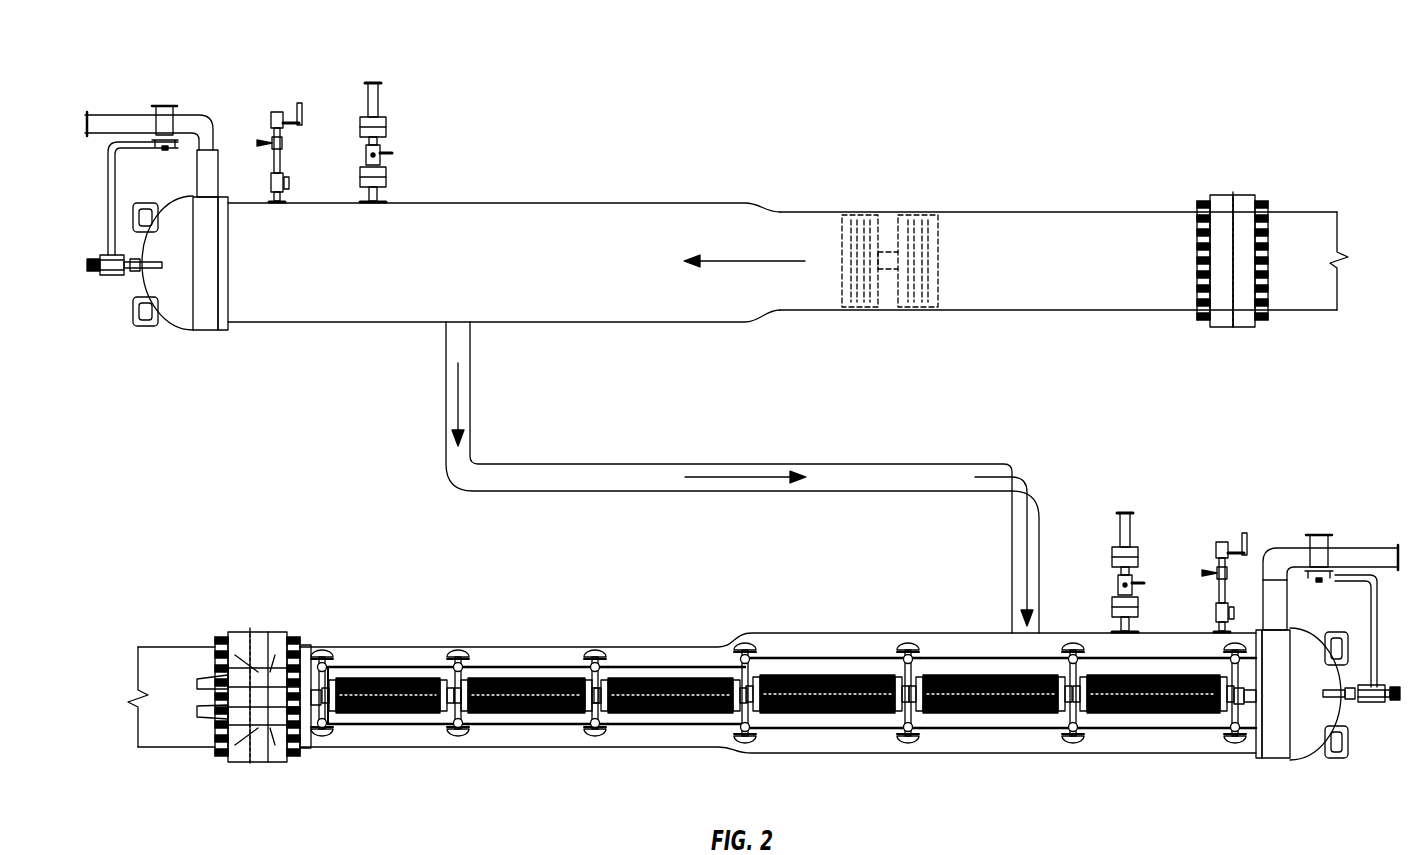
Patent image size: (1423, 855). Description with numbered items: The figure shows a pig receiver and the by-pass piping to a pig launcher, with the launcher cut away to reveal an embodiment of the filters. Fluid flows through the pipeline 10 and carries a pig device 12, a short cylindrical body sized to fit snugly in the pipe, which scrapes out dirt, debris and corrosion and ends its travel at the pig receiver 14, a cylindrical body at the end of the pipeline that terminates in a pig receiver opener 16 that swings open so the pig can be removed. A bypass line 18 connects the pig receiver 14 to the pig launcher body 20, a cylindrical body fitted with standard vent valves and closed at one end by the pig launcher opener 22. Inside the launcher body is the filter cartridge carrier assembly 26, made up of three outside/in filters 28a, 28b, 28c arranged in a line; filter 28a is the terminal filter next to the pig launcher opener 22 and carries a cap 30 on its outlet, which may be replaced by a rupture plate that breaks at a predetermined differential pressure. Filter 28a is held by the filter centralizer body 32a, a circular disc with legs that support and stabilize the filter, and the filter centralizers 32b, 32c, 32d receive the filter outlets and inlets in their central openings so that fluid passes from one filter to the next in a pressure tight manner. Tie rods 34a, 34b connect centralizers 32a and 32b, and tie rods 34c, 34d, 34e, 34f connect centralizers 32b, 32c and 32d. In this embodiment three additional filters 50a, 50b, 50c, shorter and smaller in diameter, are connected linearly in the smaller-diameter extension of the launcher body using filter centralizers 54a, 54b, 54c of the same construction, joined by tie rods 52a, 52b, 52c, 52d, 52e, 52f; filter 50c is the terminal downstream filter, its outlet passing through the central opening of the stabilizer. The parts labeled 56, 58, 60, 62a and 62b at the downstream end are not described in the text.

The pipeline 10 is at (1285, 240).
The pig device 12 is at (880, 214).
The pig receiver 14 is at (285, 325).
The pig receiver opener 16 is at (173, 325).
The bypass line 18 is at (445, 470).
The pig launcher body 20 is at (818, 633).
The pig launcher opener 22 is at (1332, 710).
The filter cartridge carrier assembly 26 is at (1005, 740).
The filter 28a is at (1118, 713).
The filter 28b is at (943, 713).
The filter 28c is at (817, 713).
The cap 30 is at (1247, 697).
The filter centralizer body 32a is at (1235, 641).
The filter centralizer 32b is at (1073, 641).
The filter centralizer 32c is at (908, 641).
The filter centralizer 32d is at (747, 641).
The tie rod 34a is at (1148, 658).
The tie rod 34b is at (1177, 730).
The tie rod 34c is at (935, 659).
The tie rod 34d is at (1030, 729).
The tie rod 34e is at (838, 658).
The tie rod 34f is at (870, 729).
The additional filter 50a is at (660, 713).
The additional filter 50b is at (517, 713).
The additional filter 50c is at (382, 713).
The tie rod 52a is at (673, 665).
The tie rod 52b is at (717, 726).
The tie rod 52c is at (538, 665).
The tie rod 52d is at (580, 726).
The tie rod 52e is at (410, 665).
The tie rod 52f is at (440, 727).
The filter centralizer 54a is at (595, 648).
The filter centralizer 54b is at (458, 648).
The filter centralizer 54c is at (322, 648).
The gasket 56 is at (310, 712).
The flange 58 is at (283, 780).
The bolt 60 is at (238, 765).
The tube 62a is at (255, 622).
The tube 62b is at (245, 784).